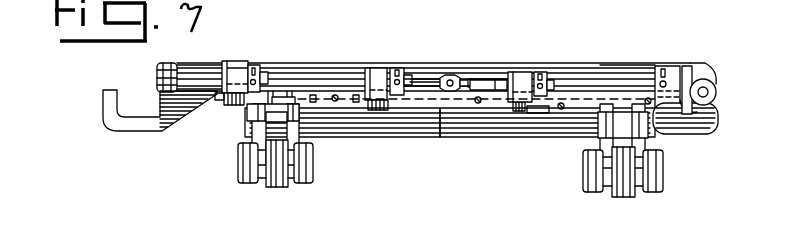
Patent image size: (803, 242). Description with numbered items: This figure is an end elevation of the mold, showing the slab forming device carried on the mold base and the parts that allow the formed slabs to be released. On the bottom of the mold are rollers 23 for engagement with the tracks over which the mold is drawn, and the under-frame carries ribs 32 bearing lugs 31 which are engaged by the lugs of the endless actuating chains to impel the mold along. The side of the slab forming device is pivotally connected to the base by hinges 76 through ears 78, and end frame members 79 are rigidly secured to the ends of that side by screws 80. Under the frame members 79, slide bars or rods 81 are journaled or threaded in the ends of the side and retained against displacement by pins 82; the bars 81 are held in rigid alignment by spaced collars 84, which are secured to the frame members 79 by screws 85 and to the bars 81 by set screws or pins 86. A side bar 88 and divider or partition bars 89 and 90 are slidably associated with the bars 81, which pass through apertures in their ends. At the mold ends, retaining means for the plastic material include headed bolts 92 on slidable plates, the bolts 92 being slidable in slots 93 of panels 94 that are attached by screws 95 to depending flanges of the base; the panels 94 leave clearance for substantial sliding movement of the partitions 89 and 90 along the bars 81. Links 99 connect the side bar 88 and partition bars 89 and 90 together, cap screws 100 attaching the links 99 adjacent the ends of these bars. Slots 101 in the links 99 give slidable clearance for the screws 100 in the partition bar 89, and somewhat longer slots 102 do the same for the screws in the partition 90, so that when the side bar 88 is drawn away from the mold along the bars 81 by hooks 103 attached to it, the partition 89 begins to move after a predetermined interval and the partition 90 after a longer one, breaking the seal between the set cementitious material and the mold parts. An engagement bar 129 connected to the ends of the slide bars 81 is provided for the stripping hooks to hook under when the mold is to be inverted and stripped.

The rollers 23 is at (278, 186).
The lugs 31 is at (456, 137).
The ribs 32 is at (366, 137).
The hinges 76 is at (705, 134).
The ears 78 is at (712, 73).
The end frame members 79 is at (312, 64).
The screws 80 is at (665, 79).
The slide bars or rods 81 is at (208, 66).
The pins 82 is at (688, 84).
The spaced collars 84 is at (265, 73).
The screws 85 is at (257, 65).
The set screws or pins 86 is at (445, 78).
The side bar 88 is at (234, 61).
The partition bar 89 is at (378, 69).
The partition bar 90 is at (518, 73).
The headed bolts 92 is at (464, 87).
The slots 93 is at (456, 80).
The panels 94 is at (336, 72).
The screws 95 is at (563, 109).
The links 99 is at (220, 102).
The cap screws 100 is at (236, 107).
The slots 101 is at (385, 111).
The slots 102 is at (535, 113).
The hooks 103 is at (130, 127).
The engagement bar 129 is at (157, 73).